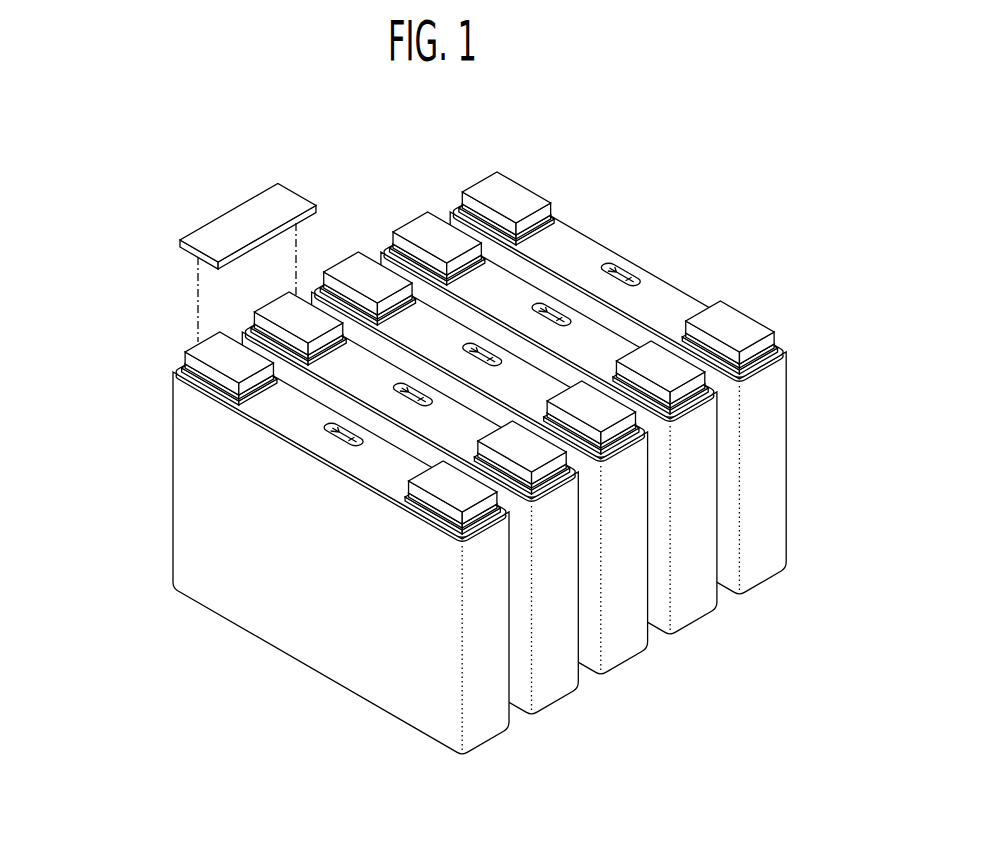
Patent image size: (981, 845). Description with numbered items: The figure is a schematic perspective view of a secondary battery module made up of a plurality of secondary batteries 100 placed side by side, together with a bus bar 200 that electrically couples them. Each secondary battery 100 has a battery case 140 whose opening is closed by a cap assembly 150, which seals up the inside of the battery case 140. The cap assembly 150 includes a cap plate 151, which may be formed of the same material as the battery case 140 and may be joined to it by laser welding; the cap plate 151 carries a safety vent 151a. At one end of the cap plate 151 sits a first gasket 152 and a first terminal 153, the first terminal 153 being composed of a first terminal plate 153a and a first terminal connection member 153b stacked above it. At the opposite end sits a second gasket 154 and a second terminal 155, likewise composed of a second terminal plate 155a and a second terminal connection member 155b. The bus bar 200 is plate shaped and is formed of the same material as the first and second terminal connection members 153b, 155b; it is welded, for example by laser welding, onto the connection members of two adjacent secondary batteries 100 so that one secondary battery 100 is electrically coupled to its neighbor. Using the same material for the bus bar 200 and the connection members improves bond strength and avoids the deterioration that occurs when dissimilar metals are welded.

The secondary battery 100 is at (411, 444).
The battery case 140 is at (283, 647).
The cap assembly 150 is at (618, 364).
The cap plate 151 is at (597, 245).
The safety vent 151a is at (634, 270).
The first gasket 152 is at (438, 516).
The first terminal 153 is at (386, 520).
The first terminal plate 153a is at (416, 508).
The first terminal connection member 153b is at (408, 495).
The second gasket 154 is at (178, 377).
The second terminal 155 is at (155, 362).
The second terminal plate 155a is at (187, 365).
The second terminal connection member 155b is at (212, 345).
The bus bar 200 is at (223, 235).